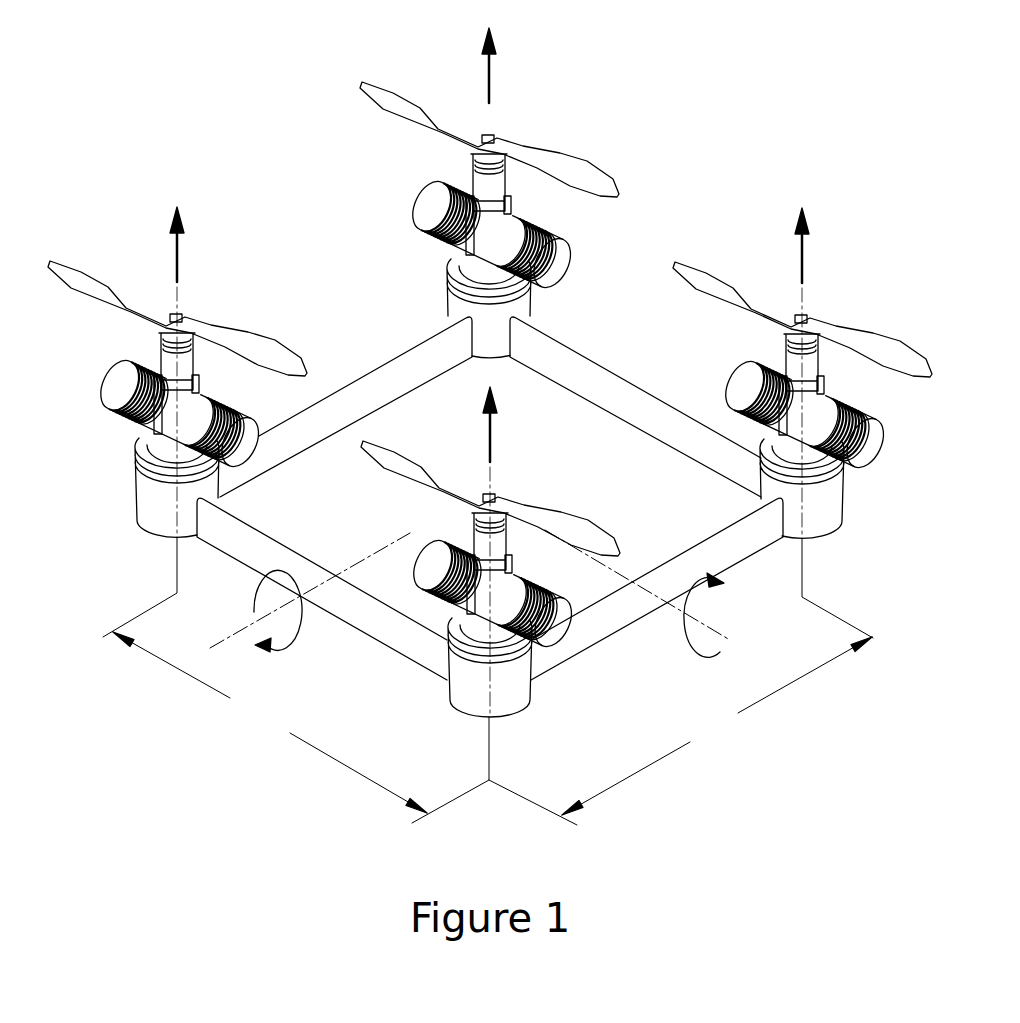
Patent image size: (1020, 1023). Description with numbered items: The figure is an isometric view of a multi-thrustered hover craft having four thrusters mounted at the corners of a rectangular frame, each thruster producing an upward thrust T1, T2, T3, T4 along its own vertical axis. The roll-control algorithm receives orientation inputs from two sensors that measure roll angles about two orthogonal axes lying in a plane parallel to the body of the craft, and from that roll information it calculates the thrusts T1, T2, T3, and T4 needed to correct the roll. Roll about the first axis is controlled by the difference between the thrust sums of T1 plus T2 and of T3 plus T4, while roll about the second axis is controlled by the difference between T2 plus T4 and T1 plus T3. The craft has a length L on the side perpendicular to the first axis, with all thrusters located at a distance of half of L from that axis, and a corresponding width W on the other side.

The thrust T1 is at (510, 453).
The thrust T2 is at (198, 272).
The thrust T3 is at (825, 272).
The thrust T4 is at (522, 91).
The width of frame W is at (278, 702).
The length of the craft L is at (730, 739).